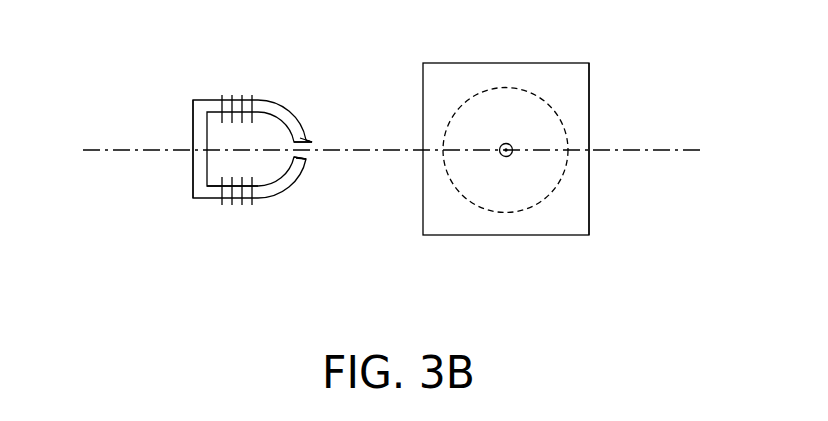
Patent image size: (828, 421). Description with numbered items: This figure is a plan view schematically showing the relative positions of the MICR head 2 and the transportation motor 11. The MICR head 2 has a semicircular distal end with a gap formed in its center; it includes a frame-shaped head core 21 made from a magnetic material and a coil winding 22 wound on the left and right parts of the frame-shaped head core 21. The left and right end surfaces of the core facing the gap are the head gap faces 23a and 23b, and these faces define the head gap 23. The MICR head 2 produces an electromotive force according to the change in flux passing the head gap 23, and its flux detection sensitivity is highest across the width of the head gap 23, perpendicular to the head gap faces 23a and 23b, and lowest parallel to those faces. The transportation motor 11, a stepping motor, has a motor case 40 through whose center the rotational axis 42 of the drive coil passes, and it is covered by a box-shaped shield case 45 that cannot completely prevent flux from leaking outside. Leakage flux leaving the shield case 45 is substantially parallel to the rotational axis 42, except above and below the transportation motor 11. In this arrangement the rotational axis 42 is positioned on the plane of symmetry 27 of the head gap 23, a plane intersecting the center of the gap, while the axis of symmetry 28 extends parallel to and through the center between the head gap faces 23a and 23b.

The MICR head 2 is at (212, 90).
The transportation motor 11 is at (552, 90).
The frame-shaped head core 21 is at (193, 167).
The coil winding 22 is at (220, 190).
The head gap 23 is at (329, 136).
The head gap face 23a is at (305, 156).
The head gap face 23b is at (316, 142).
The plane of symmetry 27 is at (141, 150).
The axis of symmetry 28 is at (308, 156).
The motor case 40 is at (560, 115).
The rotational axis 42 is at (506, 158).
The shield case 45 is at (592, 202).